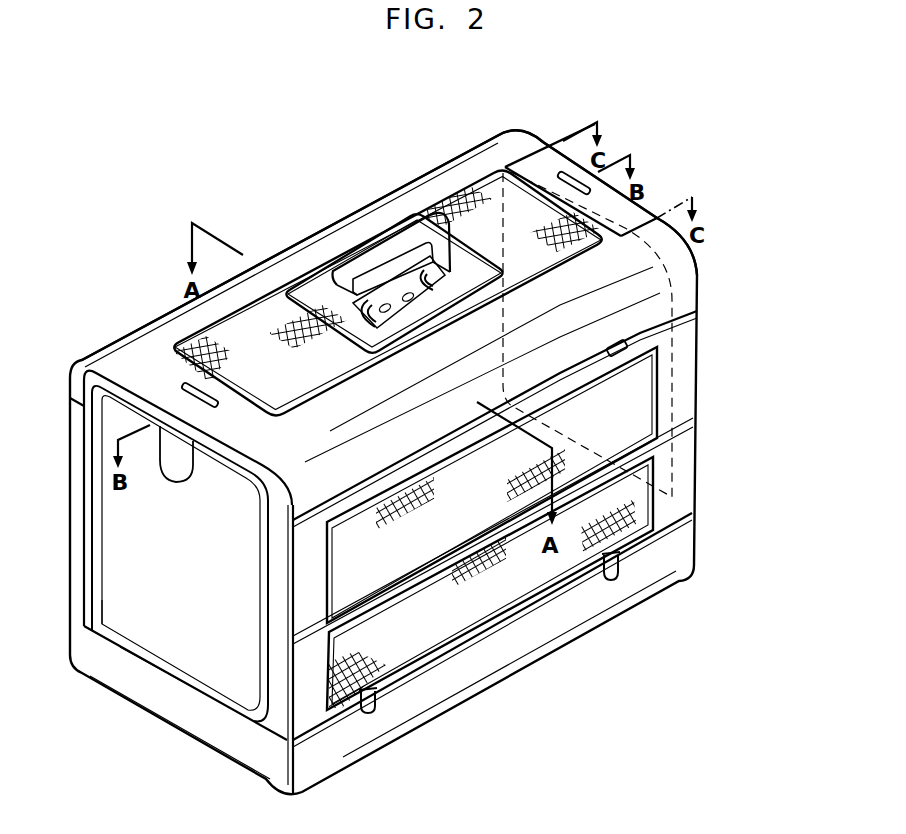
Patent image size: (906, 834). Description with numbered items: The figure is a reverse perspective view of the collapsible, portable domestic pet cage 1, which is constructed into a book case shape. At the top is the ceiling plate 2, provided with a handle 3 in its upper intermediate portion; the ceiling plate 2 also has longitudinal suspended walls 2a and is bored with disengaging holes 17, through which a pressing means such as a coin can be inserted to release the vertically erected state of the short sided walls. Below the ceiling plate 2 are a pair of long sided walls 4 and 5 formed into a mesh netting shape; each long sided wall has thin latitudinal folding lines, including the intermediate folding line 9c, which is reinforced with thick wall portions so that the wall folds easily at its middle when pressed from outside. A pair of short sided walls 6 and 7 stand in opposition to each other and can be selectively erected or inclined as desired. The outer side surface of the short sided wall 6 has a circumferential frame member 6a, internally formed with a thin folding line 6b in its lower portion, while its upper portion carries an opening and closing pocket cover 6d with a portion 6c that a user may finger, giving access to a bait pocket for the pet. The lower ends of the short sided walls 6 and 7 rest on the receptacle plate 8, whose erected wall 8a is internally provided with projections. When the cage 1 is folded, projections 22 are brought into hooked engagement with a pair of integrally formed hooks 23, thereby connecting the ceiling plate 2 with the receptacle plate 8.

The collapsible portable domestic pet cage 1 is at (232, 193).
The ceiling plate 2 is at (696, 272).
The longitudinal suspended walls 2a is at (662, 329).
The handle 3 is at (390, 255).
The long sided wall 4 is at (692, 368).
The long sided wall 5 is at (80, 443).
The short sided wall 6 is at (205, 690).
The circumferential frame member 6a is at (92, 553).
The thin folding line 6b is at (133, 663).
The finger portion 6c is at (178, 452).
The opening and closing pocket cover 6d is at (122, 586).
The short sided wall 7 is at (645, 200).
The receptacle plate 8 is at (528, 652).
The erected wall 8a is at (678, 553).
The intermediate folding line 9c is at (688, 430).
The disengaging hole 17 is at (184, 385).
The projection 22 is at (623, 344).
The hook 23 is at (613, 582).